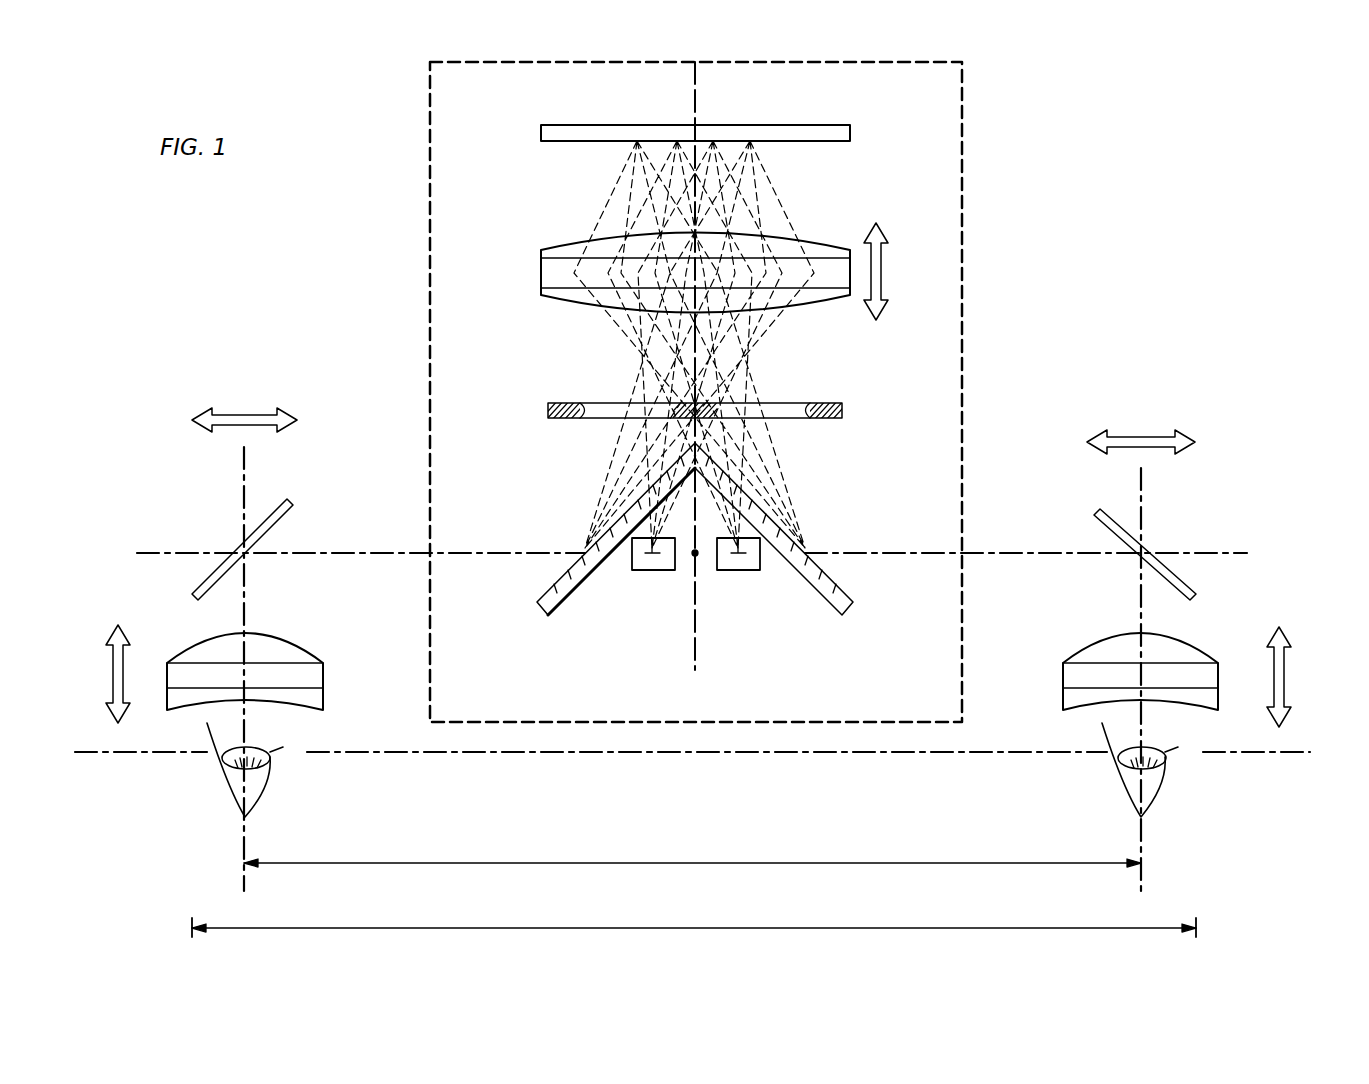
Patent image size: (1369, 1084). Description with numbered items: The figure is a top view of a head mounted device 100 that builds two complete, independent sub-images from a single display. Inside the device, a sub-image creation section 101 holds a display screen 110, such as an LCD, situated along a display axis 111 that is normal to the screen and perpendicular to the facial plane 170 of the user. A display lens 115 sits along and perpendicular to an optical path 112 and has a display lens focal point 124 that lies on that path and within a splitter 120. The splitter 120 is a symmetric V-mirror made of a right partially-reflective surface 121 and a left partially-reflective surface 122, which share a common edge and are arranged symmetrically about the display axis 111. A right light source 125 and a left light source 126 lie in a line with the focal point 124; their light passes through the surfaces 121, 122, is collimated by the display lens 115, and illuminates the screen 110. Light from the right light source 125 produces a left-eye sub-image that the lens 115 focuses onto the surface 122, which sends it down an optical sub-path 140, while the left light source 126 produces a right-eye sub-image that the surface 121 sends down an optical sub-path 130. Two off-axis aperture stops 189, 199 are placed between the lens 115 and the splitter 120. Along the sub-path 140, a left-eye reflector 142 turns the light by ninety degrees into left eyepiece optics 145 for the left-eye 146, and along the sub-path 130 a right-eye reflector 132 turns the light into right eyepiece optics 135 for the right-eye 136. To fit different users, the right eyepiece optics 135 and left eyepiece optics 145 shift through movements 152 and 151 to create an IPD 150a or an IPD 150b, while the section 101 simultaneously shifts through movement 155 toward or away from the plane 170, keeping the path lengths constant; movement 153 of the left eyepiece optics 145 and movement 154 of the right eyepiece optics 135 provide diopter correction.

The head mounted device 100 is at (252, 228).
The sub-image creation section 101 is at (964, 108).
The display screen 110 is at (823, 125).
The display axis 111 is at (693, 112).
The optical path 112 is at (697, 650).
The display lens 115 is at (541, 272).
The movement 155 is at (887, 268).
The off axis aperture stop 189 is at (588, 420).
The off axis aperture stop 199 is at (803, 420).
The splitter 120 is at (723, 553).
The right partially-reflective surface 121 is at (850, 612).
The left partially-reflective surface 122 is at (544, 608).
The display lens focal point 124 is at (690, 562).
The right light source 125 is at (742, 572).
The left light source 126 is at (645, 572).
The optical sub-path 130 is at (1022, 549).
The optical sub-path 140 is at (357, 550).
The right-eye reflector 132 is at (1194, 578).
The left-eye reflector 142 is at (198, 583).
The right eyepiece optics 135 is at (1062, 680).
The left eyepiece optics 145 is at (325, 680).
The right-eye 136 is at (1165, 800).
The left-eye 146 is at (226, 790).
The movement 151 is at (228, 410).
The movement 152 is at (1158, 437).
The movement 153 is at (112, 676).
The movement 154 is at (1286, 677).
The facial plane 170 is at (998, 754).
The IPD 150a is at (697, 860).
The IPD 150b is at (697, 925).